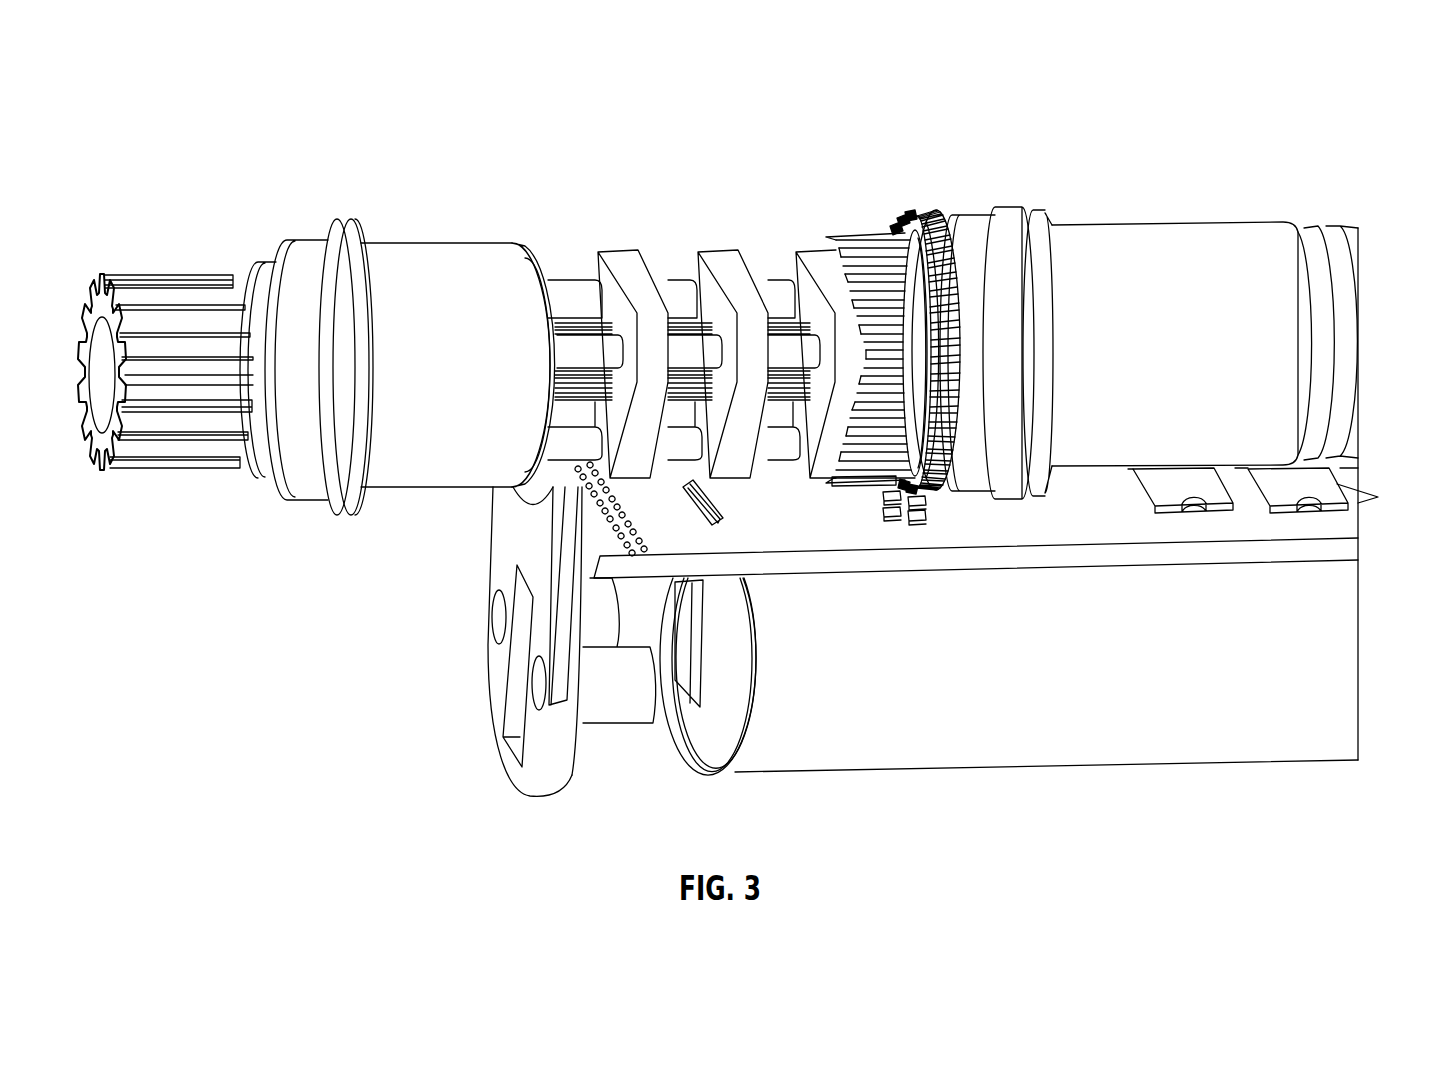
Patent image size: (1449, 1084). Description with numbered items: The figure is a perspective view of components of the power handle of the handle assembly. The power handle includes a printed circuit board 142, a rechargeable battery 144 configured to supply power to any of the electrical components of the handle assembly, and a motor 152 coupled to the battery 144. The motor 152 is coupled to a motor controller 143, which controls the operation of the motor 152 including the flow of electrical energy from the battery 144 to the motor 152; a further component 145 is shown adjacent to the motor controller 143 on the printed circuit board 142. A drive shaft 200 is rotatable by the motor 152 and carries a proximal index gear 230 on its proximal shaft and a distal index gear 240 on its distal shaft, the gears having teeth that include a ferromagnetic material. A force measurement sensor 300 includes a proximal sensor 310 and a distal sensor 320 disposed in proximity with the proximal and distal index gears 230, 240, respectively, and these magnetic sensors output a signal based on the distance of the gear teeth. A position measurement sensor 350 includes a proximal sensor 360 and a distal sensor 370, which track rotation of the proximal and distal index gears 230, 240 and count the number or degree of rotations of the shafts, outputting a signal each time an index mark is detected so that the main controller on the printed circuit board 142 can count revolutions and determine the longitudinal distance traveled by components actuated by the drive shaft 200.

The printed circuit board 142 is at (1345, 553).
The motor controller 143 is at (1185, 482).
The rechargeable battery 144 is at (970, 752).
The mounting tab 145 is at (1307, 474).
The motor 152 is at (1207, 242).
The drive shaft 200 is at (915, 192).
The proximal index gear 230 is at (937, 213).
The distal index gear 240 is at (899, 213).
The force measurement sensor 300 is at (915, 574).
The proximal sensor 310 is at (922, 520).
The distal sensor 320 is at (913, 535).
The position measurement sensor 350 is at (873, 487).
The proximal sensor 360 is at (928, 500).
The distal sensor 370 is at (888, 520).